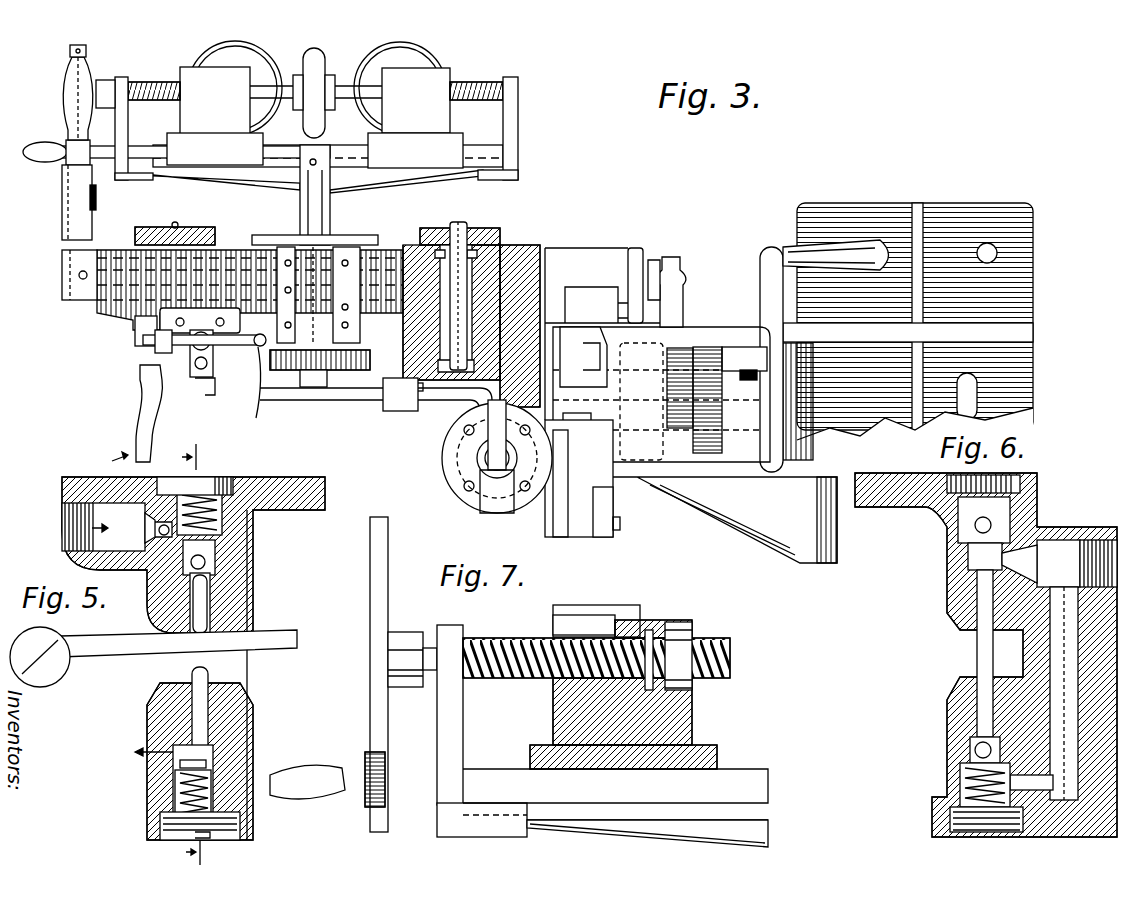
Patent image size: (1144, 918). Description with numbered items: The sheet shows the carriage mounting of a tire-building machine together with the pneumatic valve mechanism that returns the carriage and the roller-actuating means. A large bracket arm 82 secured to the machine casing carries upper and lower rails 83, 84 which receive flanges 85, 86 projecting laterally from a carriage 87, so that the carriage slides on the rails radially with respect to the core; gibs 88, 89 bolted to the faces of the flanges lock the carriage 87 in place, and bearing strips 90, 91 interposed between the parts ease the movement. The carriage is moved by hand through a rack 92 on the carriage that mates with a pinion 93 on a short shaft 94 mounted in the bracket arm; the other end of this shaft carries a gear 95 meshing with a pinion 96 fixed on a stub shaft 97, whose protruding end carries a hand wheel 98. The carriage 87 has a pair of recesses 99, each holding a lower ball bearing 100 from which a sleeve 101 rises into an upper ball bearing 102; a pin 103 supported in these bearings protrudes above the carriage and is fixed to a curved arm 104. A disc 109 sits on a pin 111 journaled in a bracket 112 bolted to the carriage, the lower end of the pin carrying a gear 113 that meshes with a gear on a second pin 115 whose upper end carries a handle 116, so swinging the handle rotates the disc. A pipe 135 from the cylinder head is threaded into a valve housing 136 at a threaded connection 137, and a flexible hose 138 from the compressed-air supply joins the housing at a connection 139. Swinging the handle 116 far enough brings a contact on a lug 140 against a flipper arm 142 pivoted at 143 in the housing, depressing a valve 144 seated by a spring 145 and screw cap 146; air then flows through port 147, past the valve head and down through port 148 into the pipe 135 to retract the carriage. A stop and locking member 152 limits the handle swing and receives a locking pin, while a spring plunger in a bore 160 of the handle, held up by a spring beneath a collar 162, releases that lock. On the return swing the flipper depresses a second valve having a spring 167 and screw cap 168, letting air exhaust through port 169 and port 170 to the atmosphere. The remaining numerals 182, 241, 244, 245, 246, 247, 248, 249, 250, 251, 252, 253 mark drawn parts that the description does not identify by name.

In FIG. 3, the bracket arm 82 is at (862, 212).
In FIG. 3, the upper rail 83 is at (595, 300).
In FIG. 3, the lower rail 84 is at (613, 500).
In FIG. 3, the flange 85 is at (580, 252).
In FIG. 3, the flange 86 is at (586, 537).
In FIG. 3, the carriage 87 is at (530, 262).
In FIG. 3, the gib 88 is at (640, 258).
In FIG. 3, the gib 89 is at (620, 530).
In FIG. 3, the bearing strip 90 is at (620, 304).
In FIG. 3, the bearing strip 91 is at (575, 505).
In FIG. 3, the rack 92 is at (577, 425).
In FIG. 3, the pinion 93 is at (577, 385).
In FIG. 3, the short shaft 94 is at (652, 405).
In FIG. 3, the gear 95 is at (720, 440).
In FIG. 3, the pinion 96 is at (700, 360).
In FIG. 3, the stub shaft 97 is at (735, 350).
In FIG. 3, the hand wheel 98 is at (769, 250).
In FIG. 3, the recess 99 is at (425, 297).
In FIG. 3, the ball bearing 100 is at (448, 390).
In FIG. 3, the sleeve 101 is at (453, 315).
In FIG. 3, the ball bearing 102 is at (490, 270).
In FIG. 3, the pin 103 is at (172, 224).
In FIG. 3, the curved arm 104 is at (205, 228).
In FIG. 3, the disc 109 is at (268, 235).
In FIG. 3, the pin 111 is at (303, 385).
In FIG. 3, the bracket 112 is at (258, 350).
In FIG. 3, the gear 113 is at (368, 365).
In FIG. 3, the pin 115 is at (326, 220).
In FIG. 3, the handle 116 is at (215, 158).
In FIG. 3, the pipe 135 is at (443, 450).
In FIG. 3, the valve housing 136 is at (212, 358).
In FIG. 6, the valve housing 136 is at (1090, 820).
In FIG. 6, the threaded connection 137 is at (1062, 560).
In FIG. 3, the flexible hose 138 is at (145, 405).
In FIG. 5, the hose connection 139 is at (63, 542).
In FIG. 3, the lug 140 is at (264, 400).
In FIG. 3, the flipper arm 142 is at (150, 343).
In FIG. 5, the flipper arm 142 is at (136, 655).
In FIG. 3, the pivot 143 is at (155, 340).
In FIG. 5, the pivot 143 is at (48, 687).
In FIG. 5, the valve 144 is at (208, 608).
In FIG. 5, the spring 145 is at (225, 515).
In FIG. 5, the screw cap 146 is at (175, 480).
In FIG. 5, the port 147 is at (156, 530).
In FIG. 6, the port 147 is at (975, 527).
In FIG. 5, the port 148 is at (216, 563).
In FIG. 6, the port 148 is at (1015, 565).
In FIG. 3, the stop and locking member 152 is at (62, 198).
In FIG. 5, the bore 160 is at (208, 672).
In FIG. 3, the collar 162 is at (66, 72).
In FIG. 5, the spring 167 is at (213, 790).
In FIG. 5, the screw cap 168 is at (178, 830).
In FIG. 5, the port 169 is at (178, 800).
In FIG. 6, the port 169 is at (1050, 782).
In FIG. 5, the port 170 is at (173, 762).
In FIG. 6, the port 170 is at (972, 752).
In FIG. 3, the knob 182 is at (678, 298).
In FIG. 3, the disc 241 is at (205, 48).
In FIG. 3, the screw 244 is at (335, 82).
In FIG. 7, the screw 244 is at (731, 654).
In FIG. 3, the bearing plate 245 is at (122, 78).
In FIG. 7, the bearing plate 245 is at (450, 630).
In FIG. 3, the bar 246 is at (280, 188).
In FIG. 7, the bar 246 is at (770, 833).
In FIG. 7, the key 247 is at (655, 636).
In FIG. 7, the nut 248 is at (560, 690).
In FIG. 7, the bushing 249 is at (695, 685).
In FIG. 3, the block 250 is at (190, 140).
In FIG. 7, the block 250 is at (720, 760).
In FIG. 3, the bar 251 is at (490, 155).
In FIG. 7, the bar 251 is at (768, 782).
In FIG. 3, the hub 252 is at (322, 112).
In FIG. 3, the plate 253 is at (70, 49).
In FIG. 7, the plate 253 is at (388, 601).